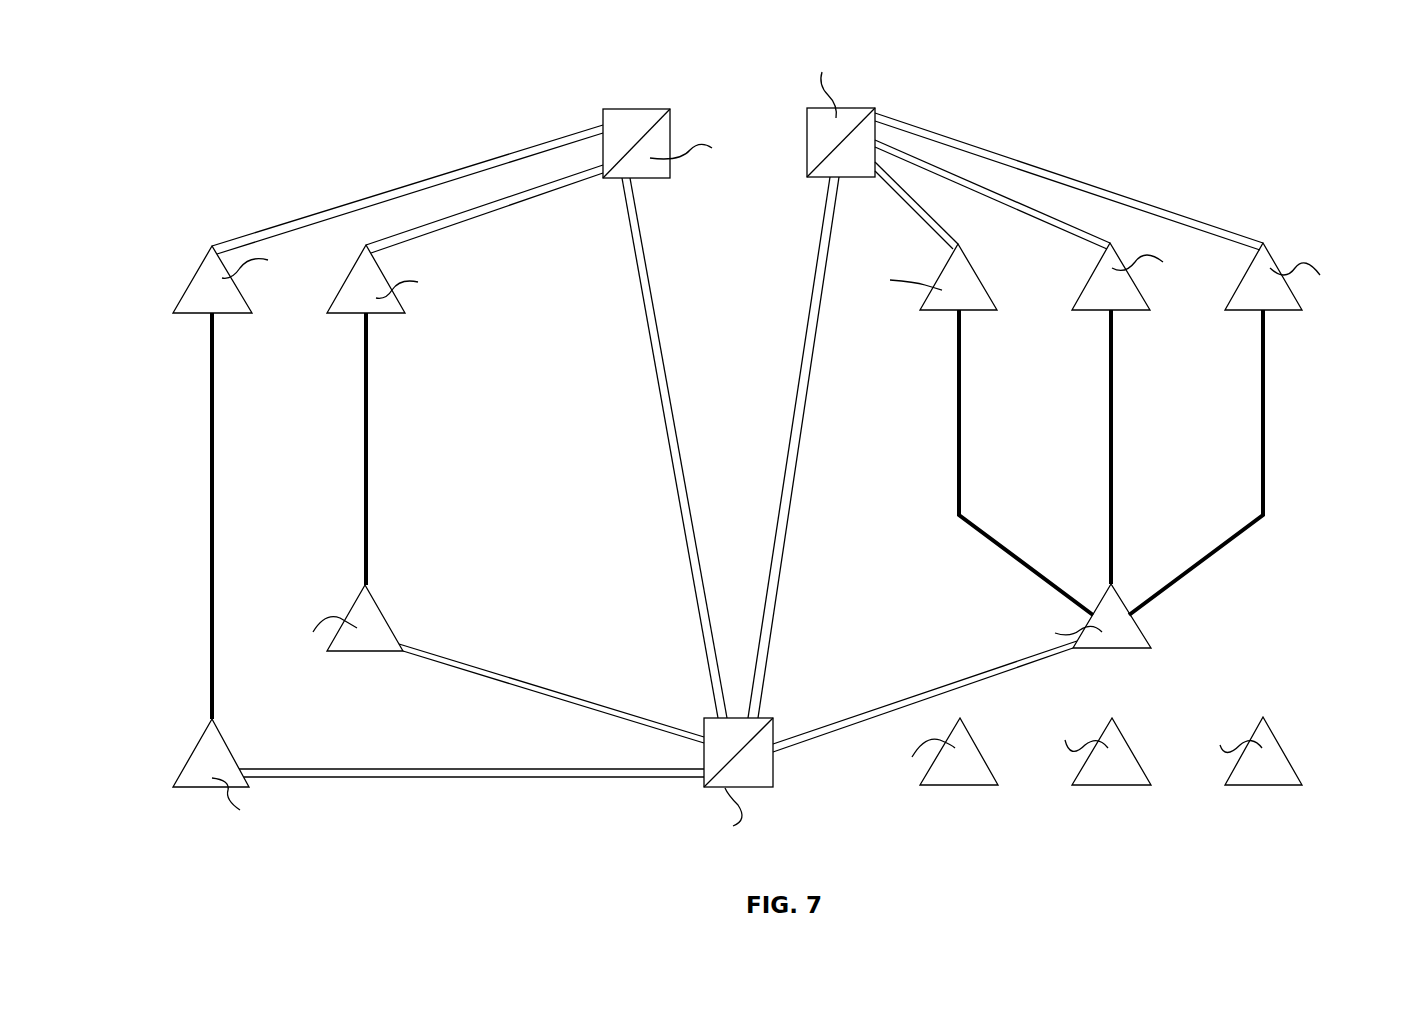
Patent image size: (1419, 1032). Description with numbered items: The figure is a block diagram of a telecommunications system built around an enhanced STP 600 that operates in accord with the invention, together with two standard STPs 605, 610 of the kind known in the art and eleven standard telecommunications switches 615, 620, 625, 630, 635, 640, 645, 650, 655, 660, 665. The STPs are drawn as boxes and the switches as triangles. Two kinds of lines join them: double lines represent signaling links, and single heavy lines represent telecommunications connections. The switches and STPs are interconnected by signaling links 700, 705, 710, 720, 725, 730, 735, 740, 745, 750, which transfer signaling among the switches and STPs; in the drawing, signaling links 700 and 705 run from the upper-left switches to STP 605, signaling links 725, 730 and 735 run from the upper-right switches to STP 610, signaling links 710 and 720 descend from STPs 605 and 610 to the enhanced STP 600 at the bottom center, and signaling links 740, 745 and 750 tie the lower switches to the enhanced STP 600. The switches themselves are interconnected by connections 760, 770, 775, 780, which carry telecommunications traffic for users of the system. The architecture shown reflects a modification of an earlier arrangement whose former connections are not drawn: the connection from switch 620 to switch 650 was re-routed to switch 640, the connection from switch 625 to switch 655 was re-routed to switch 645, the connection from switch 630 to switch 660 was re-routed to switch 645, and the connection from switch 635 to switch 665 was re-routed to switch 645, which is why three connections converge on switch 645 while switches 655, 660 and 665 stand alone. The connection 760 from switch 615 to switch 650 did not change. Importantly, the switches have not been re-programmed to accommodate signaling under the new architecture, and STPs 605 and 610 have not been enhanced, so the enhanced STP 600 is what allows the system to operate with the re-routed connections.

The enhanced STP 600 is at (740, 790).
The STP 605 is at (632, 110).
The STP 610 is at (848, 108).
The switch 615 is at (228, 314).
The switch 620 is at (382, 314).
The switch 625 is at (945, 314).
The switch 630 is at (1100, 314).
The switch 635 is at (1255, 314).
The switch 640 is at (388, 612).
The switch 645 is at (1095, 652).
The switch 650 is at (232, 745).
The switch 655 is at (945, 786).
The switch 660 is at (1095, 786).
The switch 665 is at (1245, 786).
The signaling link 700 is at (462, 162).
The signaling link 705 is at (465, 218).
The signaling link 710 is at (683, 518).
The signaling link 720 is at (788, 515).
The signaling link 725 is at (905, 210).
The signaling link 730 is at (942, 165).
The signaling link 735 is at (1110, 188).
The signaling link 740 is at (370, 785).
The signaling link 745 is at (540, 685).
The signaling link 750 is at (990, 670).
The connection 760 is at (215, 505).
The connection 770 is at (963, 400).
The connection 775 is at (1116, 400).
The connection 780 is at (1268, 400).